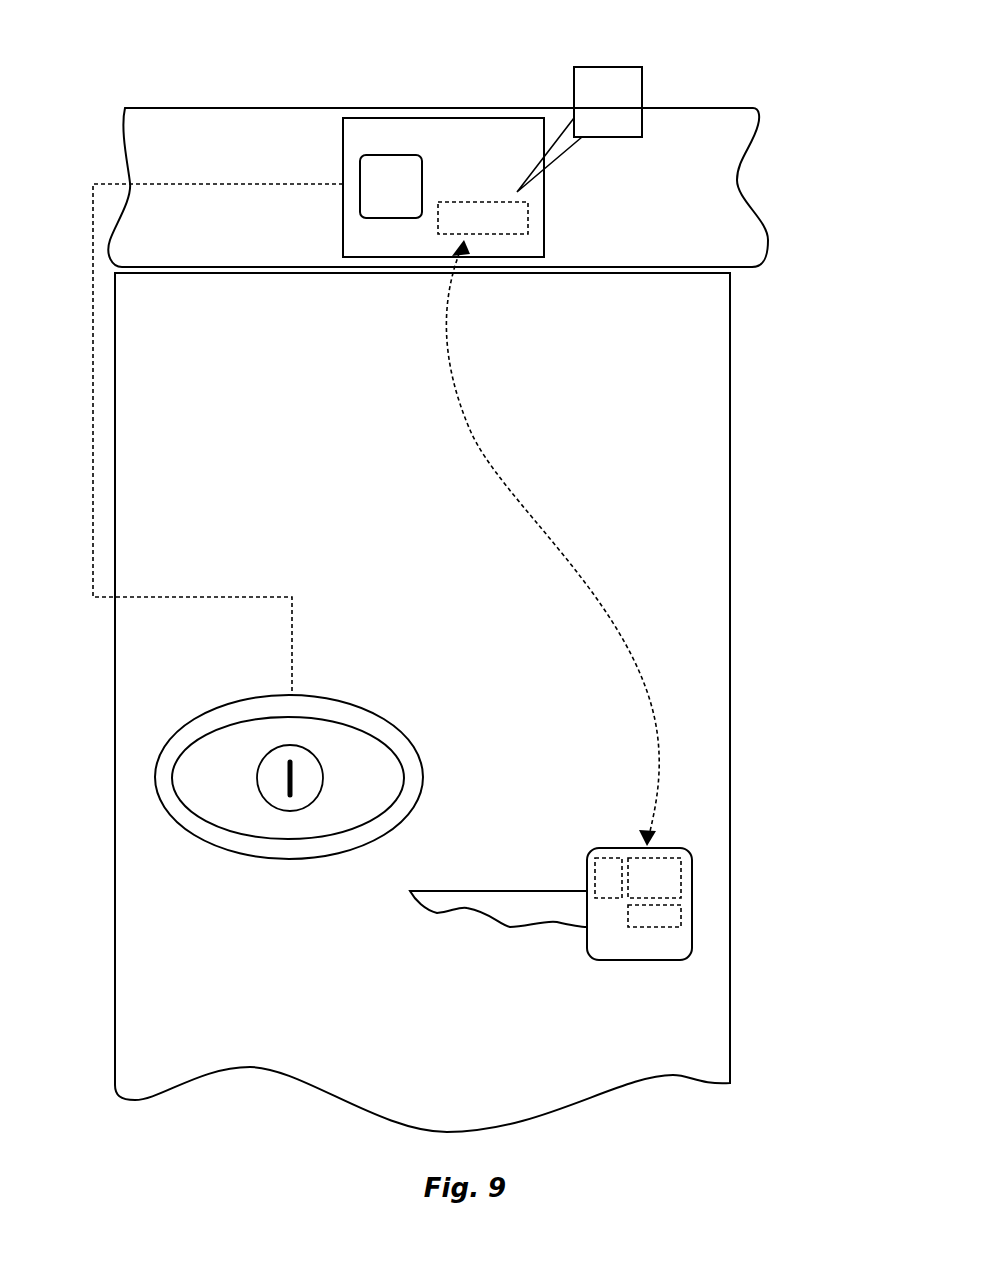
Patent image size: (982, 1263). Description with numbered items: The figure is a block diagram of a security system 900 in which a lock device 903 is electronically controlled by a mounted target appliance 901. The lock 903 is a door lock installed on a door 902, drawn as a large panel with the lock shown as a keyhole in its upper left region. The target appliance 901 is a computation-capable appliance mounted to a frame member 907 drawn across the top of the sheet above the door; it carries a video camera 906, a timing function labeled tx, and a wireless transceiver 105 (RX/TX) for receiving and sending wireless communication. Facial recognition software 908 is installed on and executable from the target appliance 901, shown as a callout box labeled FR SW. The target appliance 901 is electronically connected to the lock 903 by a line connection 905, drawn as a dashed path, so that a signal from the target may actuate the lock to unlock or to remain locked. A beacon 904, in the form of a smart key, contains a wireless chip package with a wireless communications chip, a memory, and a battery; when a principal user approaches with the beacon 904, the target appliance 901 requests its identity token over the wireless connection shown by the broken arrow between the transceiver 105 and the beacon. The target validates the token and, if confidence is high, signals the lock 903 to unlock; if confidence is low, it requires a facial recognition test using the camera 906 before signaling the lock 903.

The security system 900 is at (492, 86).
The target appliance 901 is at (545, 192).
The door 902 is at (732, 510).
The lock device 903 is at (423, 778).
The beacon 904 is at (640, 960).
The line connection 905 is at (192, 597).
The video camera 906 is at (393, 155).
The frame member 907 is at (318, 107).
The facial recognition software 908 is at (643, 105).
The wireless transceiver 105 is at (488, 202).